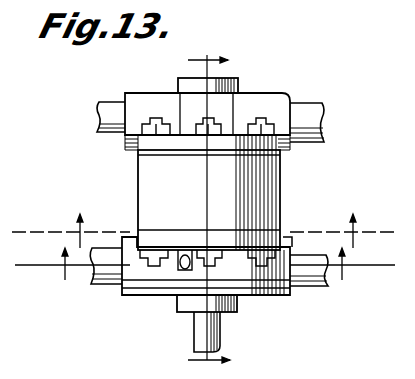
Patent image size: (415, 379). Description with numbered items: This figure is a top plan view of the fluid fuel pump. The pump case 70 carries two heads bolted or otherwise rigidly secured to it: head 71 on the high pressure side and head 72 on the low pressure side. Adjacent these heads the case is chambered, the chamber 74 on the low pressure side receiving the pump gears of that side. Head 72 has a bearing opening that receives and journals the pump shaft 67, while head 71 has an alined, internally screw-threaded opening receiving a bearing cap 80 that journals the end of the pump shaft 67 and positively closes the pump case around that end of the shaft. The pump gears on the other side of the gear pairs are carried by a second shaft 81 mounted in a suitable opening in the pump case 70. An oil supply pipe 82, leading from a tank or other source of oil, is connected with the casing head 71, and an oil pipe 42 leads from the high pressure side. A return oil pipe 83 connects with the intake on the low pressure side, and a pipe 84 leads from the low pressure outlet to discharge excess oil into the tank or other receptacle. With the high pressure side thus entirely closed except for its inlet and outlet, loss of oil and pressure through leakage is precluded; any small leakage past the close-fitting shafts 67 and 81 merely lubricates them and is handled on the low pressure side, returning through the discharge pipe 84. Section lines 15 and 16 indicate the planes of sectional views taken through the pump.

The chamber 74 is at (209, 209).
The bearing cap 80 is at (230, 93).
The head 71 is at (245, 135).
The oil pipe 42 is at (108, 108).
The oil supply pipe 82 is at (308, 112).
The pump case 70 is at (150, 185).
The head 72 is at (185, 258).
The pipe 84 is at (98, 272).
The return oil pipe 83 is at (312, 278).
The shaft 81 is at (235, 312).
The pump shaft 67 is at (197, 318).
The section line 16 is at (203, 231).
The section line 15 is at (205, 264).